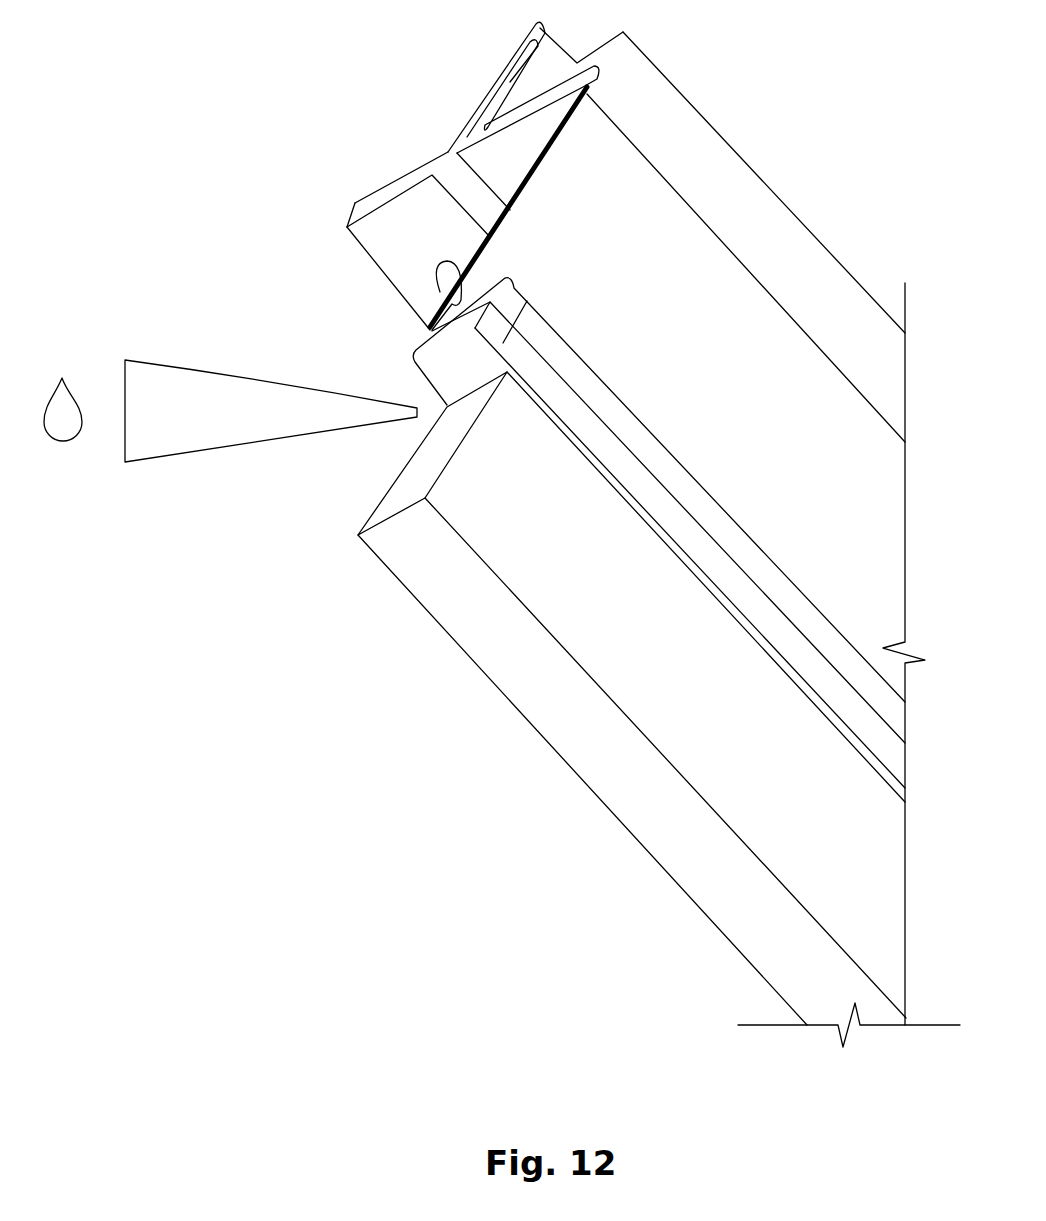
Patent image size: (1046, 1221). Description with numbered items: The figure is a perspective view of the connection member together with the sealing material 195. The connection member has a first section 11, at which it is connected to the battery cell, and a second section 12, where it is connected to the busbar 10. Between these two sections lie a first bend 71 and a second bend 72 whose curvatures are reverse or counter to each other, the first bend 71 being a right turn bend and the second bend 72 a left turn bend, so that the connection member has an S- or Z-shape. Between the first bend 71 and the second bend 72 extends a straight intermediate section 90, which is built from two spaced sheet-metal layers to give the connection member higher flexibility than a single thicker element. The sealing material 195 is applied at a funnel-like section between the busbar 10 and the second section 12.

The busbar 10 is at (559, 521).
The first section 11 is at (620, 523).
The second section 12 is at (675, 441).
The first bend 71 is at (822, 206).
The second bend 72 is at (398, 356).
The intermediate section 90 is at (628, 269).
The sealing material 195 is at (58, 452).